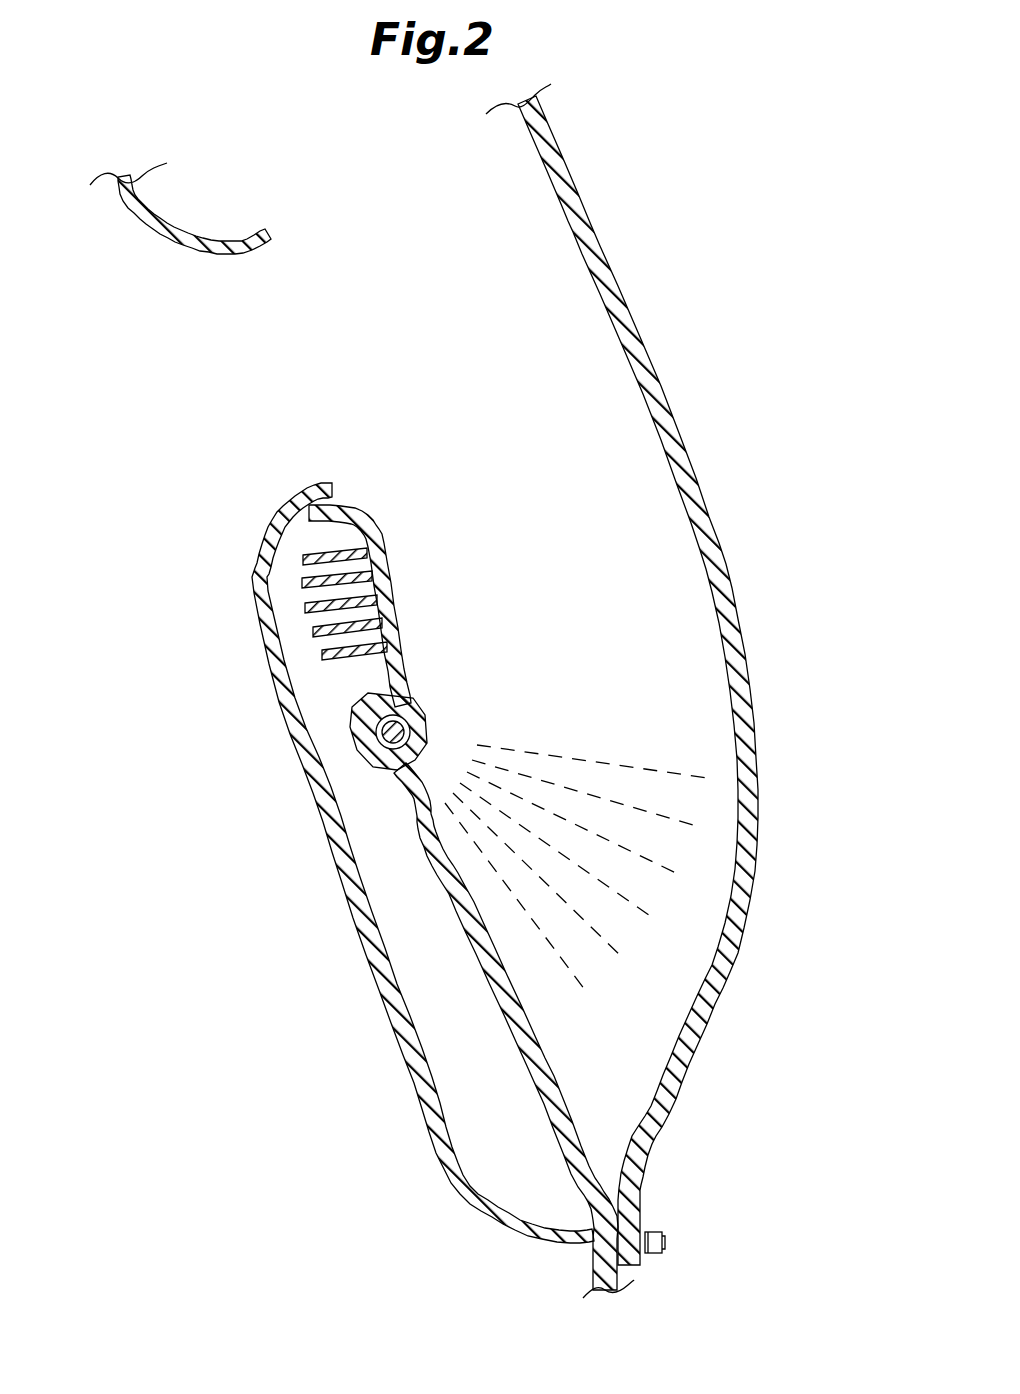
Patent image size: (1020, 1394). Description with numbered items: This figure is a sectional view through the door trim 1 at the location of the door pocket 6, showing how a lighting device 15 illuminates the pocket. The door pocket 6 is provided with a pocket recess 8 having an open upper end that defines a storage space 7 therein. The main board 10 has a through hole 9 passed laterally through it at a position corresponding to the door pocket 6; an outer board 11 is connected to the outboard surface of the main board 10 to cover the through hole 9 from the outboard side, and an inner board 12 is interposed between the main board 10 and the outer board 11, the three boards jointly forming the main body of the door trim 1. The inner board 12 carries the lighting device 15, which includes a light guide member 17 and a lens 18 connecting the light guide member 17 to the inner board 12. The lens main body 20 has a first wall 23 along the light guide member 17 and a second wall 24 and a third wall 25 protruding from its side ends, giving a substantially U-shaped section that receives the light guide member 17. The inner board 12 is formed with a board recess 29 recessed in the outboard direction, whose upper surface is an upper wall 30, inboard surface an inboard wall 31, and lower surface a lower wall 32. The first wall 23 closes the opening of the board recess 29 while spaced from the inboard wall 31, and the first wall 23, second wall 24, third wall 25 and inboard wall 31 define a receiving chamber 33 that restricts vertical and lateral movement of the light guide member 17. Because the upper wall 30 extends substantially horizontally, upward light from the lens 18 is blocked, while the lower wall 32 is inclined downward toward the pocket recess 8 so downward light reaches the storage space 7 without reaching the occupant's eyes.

The door trim 1 is at (195, 968).
The door pocket 6 is at (362, 431).
The storage space 7 is at (672, 972).
The pocket recess 8 is at (490, 438).
The through hole 9 is at (300, 319).
The main board 10 is at (378, 987).
The outer board 11 is at (727, 572).
The inner board 12 is at (536, 1046).
The lighting device 15 is at (427, 713).
The light guide member 17 is at (368, 745).
The lens 18 is at (423, 738).
The lens main body 20 is at (436, 696).
The first wall 23 is at (423, 722).
The second wall 24 is at (413, 704).
The third wall 25 is at (410, 763).
The board recess 29 is at (392, 808).
The upper wall 30 is at (373, 693).
The inboard wall 31 is at (365, 720).
The lower wall 32 is at (378, 780).
The receiving chamber 33 is at (365, 760).